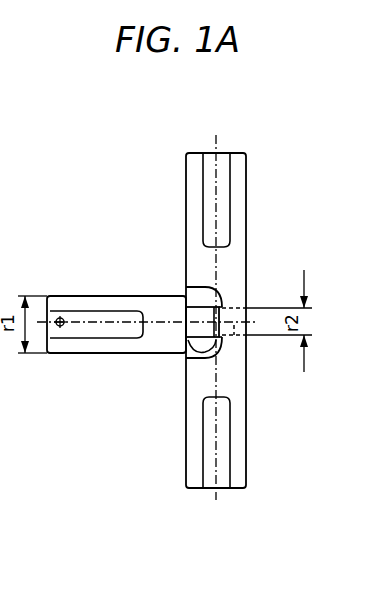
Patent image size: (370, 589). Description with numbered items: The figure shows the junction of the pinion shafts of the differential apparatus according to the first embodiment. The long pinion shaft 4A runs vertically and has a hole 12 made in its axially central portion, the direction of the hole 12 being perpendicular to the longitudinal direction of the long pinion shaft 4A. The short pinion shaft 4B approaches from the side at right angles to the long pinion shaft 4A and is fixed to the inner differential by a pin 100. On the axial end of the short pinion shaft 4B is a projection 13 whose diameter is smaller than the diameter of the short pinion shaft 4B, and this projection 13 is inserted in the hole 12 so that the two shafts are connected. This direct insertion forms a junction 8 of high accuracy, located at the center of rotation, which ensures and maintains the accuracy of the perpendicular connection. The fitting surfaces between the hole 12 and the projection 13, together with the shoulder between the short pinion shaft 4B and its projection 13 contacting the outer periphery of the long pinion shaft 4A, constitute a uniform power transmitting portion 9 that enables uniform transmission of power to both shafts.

The long pinion shaft 4A is at (247, 197).
The short pinion shaft 4B is at (100, 353).
The pin 100 is at (63, 318).
The junction 8 is at (231, 297).
The uniform power transmitting portion 9 is at (208, 343).
The hole 12 is at (250, 338).
The projection 13 is at (196, 303).